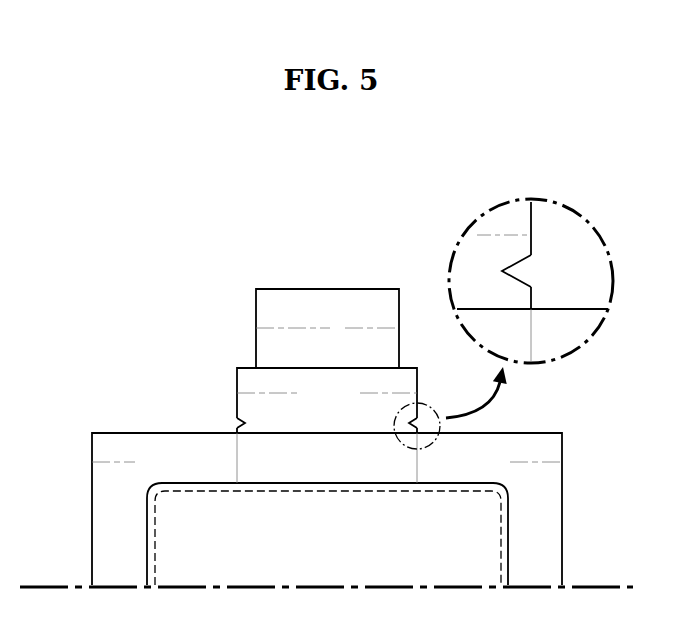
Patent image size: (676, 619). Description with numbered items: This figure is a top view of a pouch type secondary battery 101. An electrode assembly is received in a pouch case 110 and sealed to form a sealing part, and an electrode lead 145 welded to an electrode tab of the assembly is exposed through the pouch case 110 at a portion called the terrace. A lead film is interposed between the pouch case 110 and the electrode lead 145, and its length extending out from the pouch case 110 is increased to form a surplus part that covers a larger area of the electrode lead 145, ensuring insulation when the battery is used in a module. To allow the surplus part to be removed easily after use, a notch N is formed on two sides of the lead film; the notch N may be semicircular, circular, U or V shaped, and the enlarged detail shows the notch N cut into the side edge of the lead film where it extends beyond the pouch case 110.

The pouch type secondary battery 101 is at (150, 287).
The pouch case 110 is at (140, 433).
The electrode lead 145 is at (291, 296).
The notch N is at (536, 271).